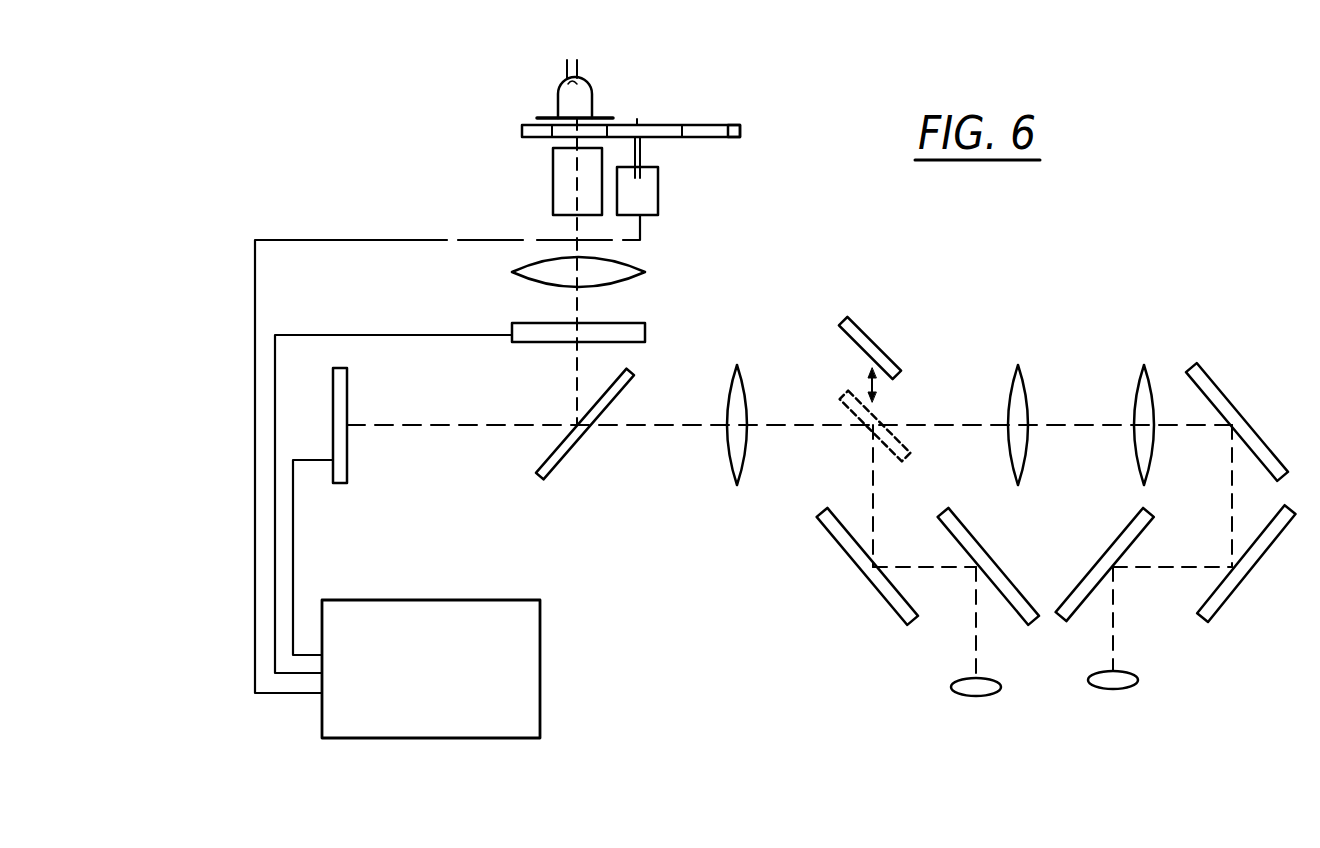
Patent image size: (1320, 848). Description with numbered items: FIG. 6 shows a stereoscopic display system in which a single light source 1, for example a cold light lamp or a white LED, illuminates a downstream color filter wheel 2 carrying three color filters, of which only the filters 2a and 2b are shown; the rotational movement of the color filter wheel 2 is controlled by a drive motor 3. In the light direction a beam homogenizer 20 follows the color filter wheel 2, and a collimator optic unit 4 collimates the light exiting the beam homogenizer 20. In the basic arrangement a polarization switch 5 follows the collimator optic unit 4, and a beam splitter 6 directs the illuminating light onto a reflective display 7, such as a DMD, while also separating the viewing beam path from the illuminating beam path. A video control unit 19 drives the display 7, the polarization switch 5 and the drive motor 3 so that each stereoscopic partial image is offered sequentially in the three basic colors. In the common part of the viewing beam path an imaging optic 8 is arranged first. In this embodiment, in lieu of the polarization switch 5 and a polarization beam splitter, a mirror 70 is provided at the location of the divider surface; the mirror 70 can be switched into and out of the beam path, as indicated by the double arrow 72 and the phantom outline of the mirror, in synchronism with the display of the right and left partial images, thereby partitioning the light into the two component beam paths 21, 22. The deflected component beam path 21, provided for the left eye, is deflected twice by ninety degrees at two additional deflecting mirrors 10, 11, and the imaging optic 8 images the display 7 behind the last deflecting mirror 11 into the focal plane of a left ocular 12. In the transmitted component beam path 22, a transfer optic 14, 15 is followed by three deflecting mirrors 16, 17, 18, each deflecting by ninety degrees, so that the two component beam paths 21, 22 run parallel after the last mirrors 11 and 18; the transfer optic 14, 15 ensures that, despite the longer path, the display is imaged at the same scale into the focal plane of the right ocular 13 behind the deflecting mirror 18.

The light source 1 is at (592, 100).
The color filter wheel 2 is at (665, 128).
The filter 2a is at (725, 125).
The filter 2b is at (557, 119).
The drive motor 3 is at (650, 200).
The collimator optic unit 4 is at (645, 272).
The polarization switch 5 is at (645, 331).
The beam splitter 6 is at (560, 470).
The reflective display 7 is at (347, 470).
The imaging optic 8 is at (740, 372).
The deflecting mirror 10 is at (878, 598).
The deflecting mirror 11 is at (1018, 582).
The left ocular 12 is at (988, 697).
The right ocular 13 is at (1125, 690).
The transfer optic 14 is at (1021, 374).
The transfer optic 15 is at (1148, 373).
The deflecting mirror 16 is at (1225, 392).
The deflecting mirror 17 is at (1232, 600).
The deflecting mirror 18 is at (1118, 540).
The video control unit 19 is at (468, 740).
The beam homogenizer 20 is at (553, 196).
The component beam path 21 is at (873, 498).
The component beam path 22 is at (1226, 500).
The mirror 70 is at (883, 354).
The double arrow 72 is at (878, 386).